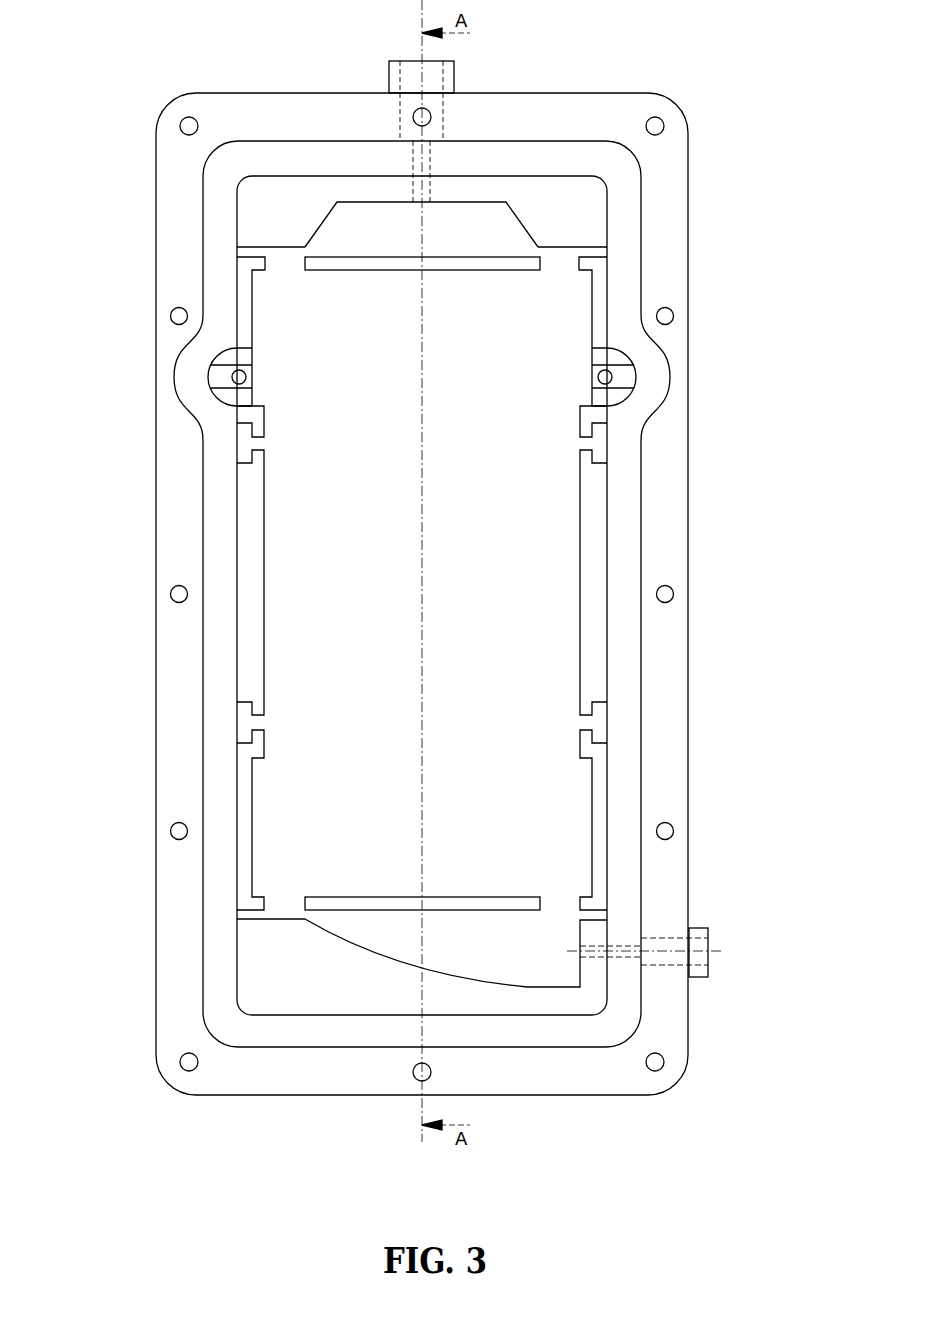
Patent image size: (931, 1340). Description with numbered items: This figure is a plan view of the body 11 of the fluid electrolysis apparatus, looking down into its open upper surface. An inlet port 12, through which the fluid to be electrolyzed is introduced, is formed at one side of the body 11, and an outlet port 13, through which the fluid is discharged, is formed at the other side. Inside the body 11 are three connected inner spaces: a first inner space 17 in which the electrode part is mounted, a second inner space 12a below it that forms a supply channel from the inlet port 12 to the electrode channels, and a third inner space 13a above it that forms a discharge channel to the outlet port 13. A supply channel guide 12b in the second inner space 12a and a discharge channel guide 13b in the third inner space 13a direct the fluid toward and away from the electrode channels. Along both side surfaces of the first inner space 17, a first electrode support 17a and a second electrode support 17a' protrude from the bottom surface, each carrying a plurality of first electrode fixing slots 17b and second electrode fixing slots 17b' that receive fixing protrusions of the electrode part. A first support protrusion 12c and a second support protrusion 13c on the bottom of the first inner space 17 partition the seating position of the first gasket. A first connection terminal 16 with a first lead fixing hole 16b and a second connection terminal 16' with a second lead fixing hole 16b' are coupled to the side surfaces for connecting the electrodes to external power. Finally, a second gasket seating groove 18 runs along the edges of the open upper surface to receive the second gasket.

The body 11 is at (678, 1020).
The inlet port 12 is at (702, 945).
The second inner space 12a is at (515, 952).
The supply channel guide 12b is at (322, 980).
The first support protrusion 12c is at (475, 898).
The outlet port 13 is at (433, 77).
The third inner space 13a is at (376, 236).
The discharge channel guide 13b is at (263, 218).
The second support protrusion 13c is at (477, 263).
The first connection terminal 16 is at (168, 377).
The first lead fixing hole 16b is at (159, 344).
The second connection terminal 16' is at (680, 377).
The second lead fixing hole 16b' is at (688, 344).
The first inner space 17 is at (470, 565).
The first electrode support 17a is at (164, 582).
The second electrode support 17a' is at (683, 582).
The first electrode fixing slots 17b is at (163, 659).
The second electrode fixing slots 17b' is at (683, 659).
The second gasket seating groove 18 is at (632, 247).